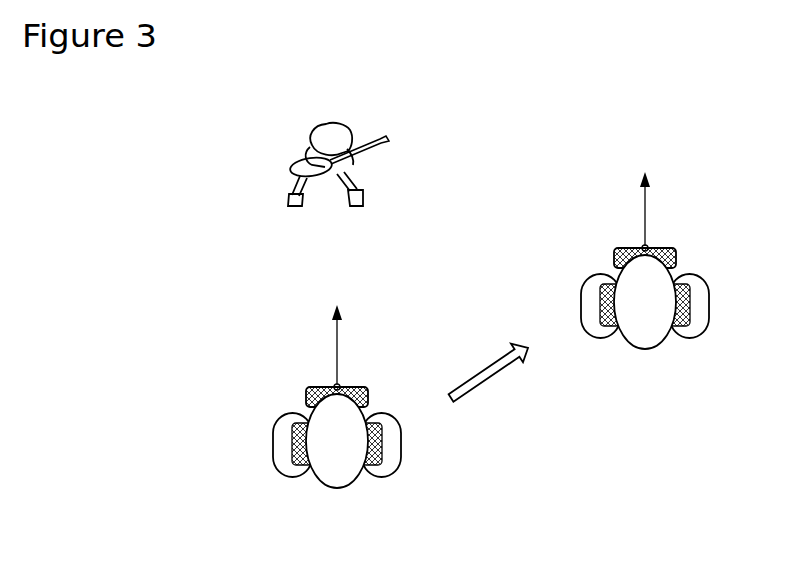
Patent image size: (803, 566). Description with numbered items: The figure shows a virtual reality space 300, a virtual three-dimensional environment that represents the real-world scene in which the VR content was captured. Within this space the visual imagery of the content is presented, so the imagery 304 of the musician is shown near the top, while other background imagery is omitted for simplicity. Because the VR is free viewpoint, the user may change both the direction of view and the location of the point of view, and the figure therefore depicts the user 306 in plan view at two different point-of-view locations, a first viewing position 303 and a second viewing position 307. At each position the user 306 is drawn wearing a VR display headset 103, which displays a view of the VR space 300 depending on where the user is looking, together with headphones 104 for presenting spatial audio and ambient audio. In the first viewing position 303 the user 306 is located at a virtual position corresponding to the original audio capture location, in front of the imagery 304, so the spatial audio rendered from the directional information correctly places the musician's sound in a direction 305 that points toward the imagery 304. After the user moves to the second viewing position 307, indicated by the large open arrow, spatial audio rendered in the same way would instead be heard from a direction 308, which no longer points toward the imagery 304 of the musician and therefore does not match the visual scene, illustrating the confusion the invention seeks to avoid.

The virtual reality space 300 is at (238, 277).
The first viewing position 303 is at (236, 410).
The imagery of the musician 304 is at (328, 140).
The direction 305 is at (337, 357).
The user 306 is at (357, 422).
The second viewing position 307 is at (546, 260).
The direction 308 is at (645, 210).
The VR display headset 103 is at (318, 397).
The headphones 104 is at (378, 460).